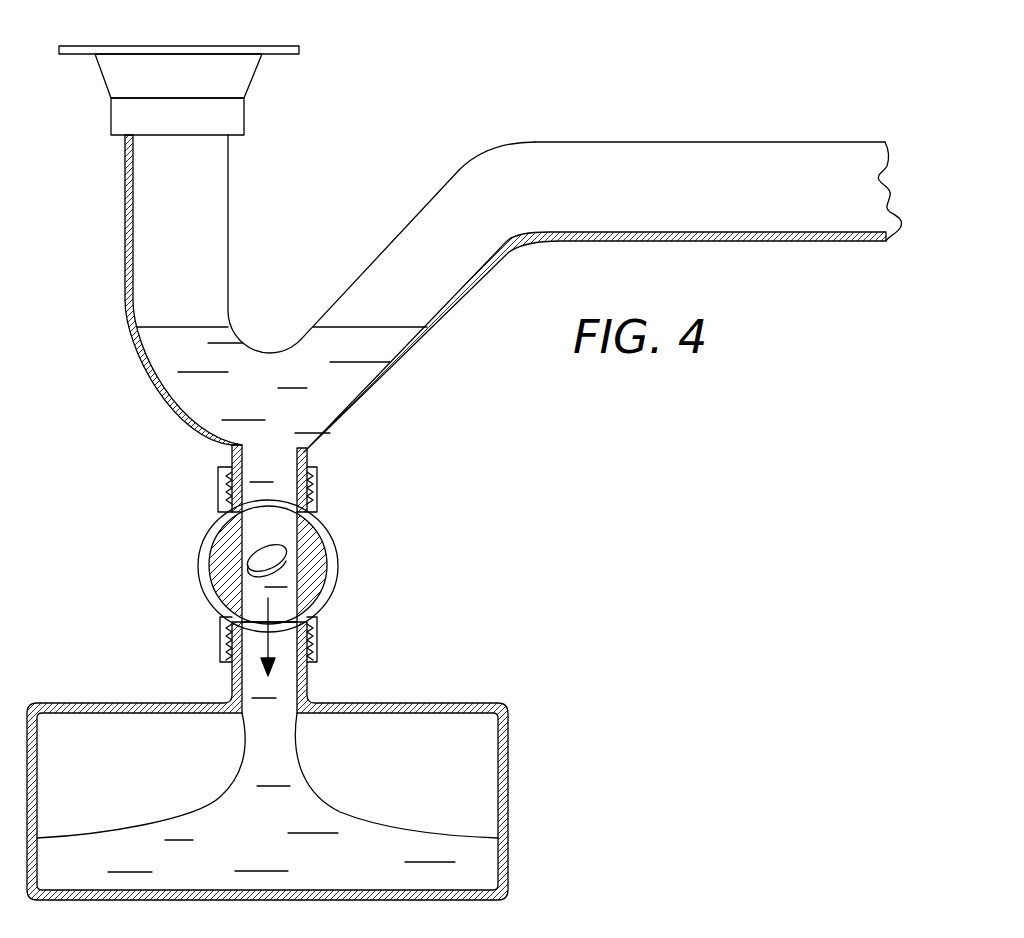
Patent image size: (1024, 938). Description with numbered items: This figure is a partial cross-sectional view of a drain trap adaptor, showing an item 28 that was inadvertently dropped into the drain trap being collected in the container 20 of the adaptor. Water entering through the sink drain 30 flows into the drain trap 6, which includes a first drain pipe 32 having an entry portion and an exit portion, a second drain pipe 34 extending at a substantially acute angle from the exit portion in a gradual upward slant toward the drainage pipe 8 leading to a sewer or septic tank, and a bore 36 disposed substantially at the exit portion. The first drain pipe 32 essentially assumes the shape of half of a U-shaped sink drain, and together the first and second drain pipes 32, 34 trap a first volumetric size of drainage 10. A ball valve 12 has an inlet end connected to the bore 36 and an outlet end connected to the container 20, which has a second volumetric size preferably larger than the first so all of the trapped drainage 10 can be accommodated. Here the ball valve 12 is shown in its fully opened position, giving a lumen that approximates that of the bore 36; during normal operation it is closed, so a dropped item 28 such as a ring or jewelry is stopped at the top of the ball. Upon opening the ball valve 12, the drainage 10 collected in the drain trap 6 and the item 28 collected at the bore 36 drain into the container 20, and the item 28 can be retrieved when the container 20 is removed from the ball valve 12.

The sink drain 30 is at (178, 46).
The drainage pipe 8 is at (702, 142).
The drain trap 6 is at (252, 210).
The first drain pipe 32 is at (228, 270).
The second drain pipe 34 is at (365, 265).
The drainage 10 is at (388, 338).
The bore 36 is at (305, 456).
The item or material to be captured and retrieved 28 is at (282, 550).
The ball valve 12 is at (202, 564).
The catchment container or bottle 20 is at (407, 703).